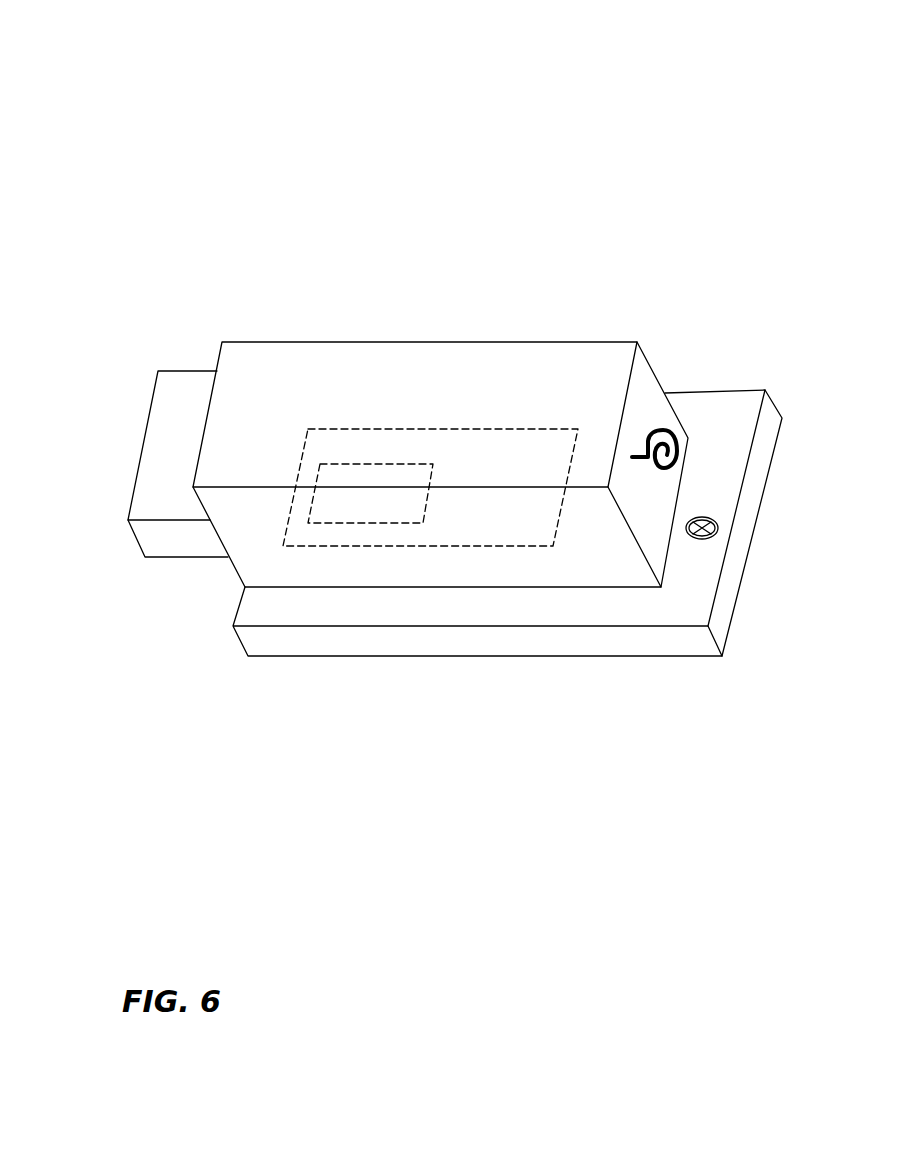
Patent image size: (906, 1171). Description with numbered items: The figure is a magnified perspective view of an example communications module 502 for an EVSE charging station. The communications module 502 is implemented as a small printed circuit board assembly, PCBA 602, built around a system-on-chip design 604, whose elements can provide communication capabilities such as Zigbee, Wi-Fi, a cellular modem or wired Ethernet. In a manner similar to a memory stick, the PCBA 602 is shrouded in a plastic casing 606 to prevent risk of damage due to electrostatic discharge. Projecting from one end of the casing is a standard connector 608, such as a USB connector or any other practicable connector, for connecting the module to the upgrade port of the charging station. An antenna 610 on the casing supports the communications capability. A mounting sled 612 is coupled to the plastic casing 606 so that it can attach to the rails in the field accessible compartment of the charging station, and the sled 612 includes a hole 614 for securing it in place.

The communications module 502 is at (114, 123).
The printed circuit board assembly 602 is at (338, 429).
The system-on-chip design 604 is at (417, 464).
The plastic casing 606 is at (465, 341).
The standard connector 608 is at (153, 393).
The antenna 610 is at (658, 473).
The mounting sled 612 is at (342, 656).
The hole 614 is at (710, 517).